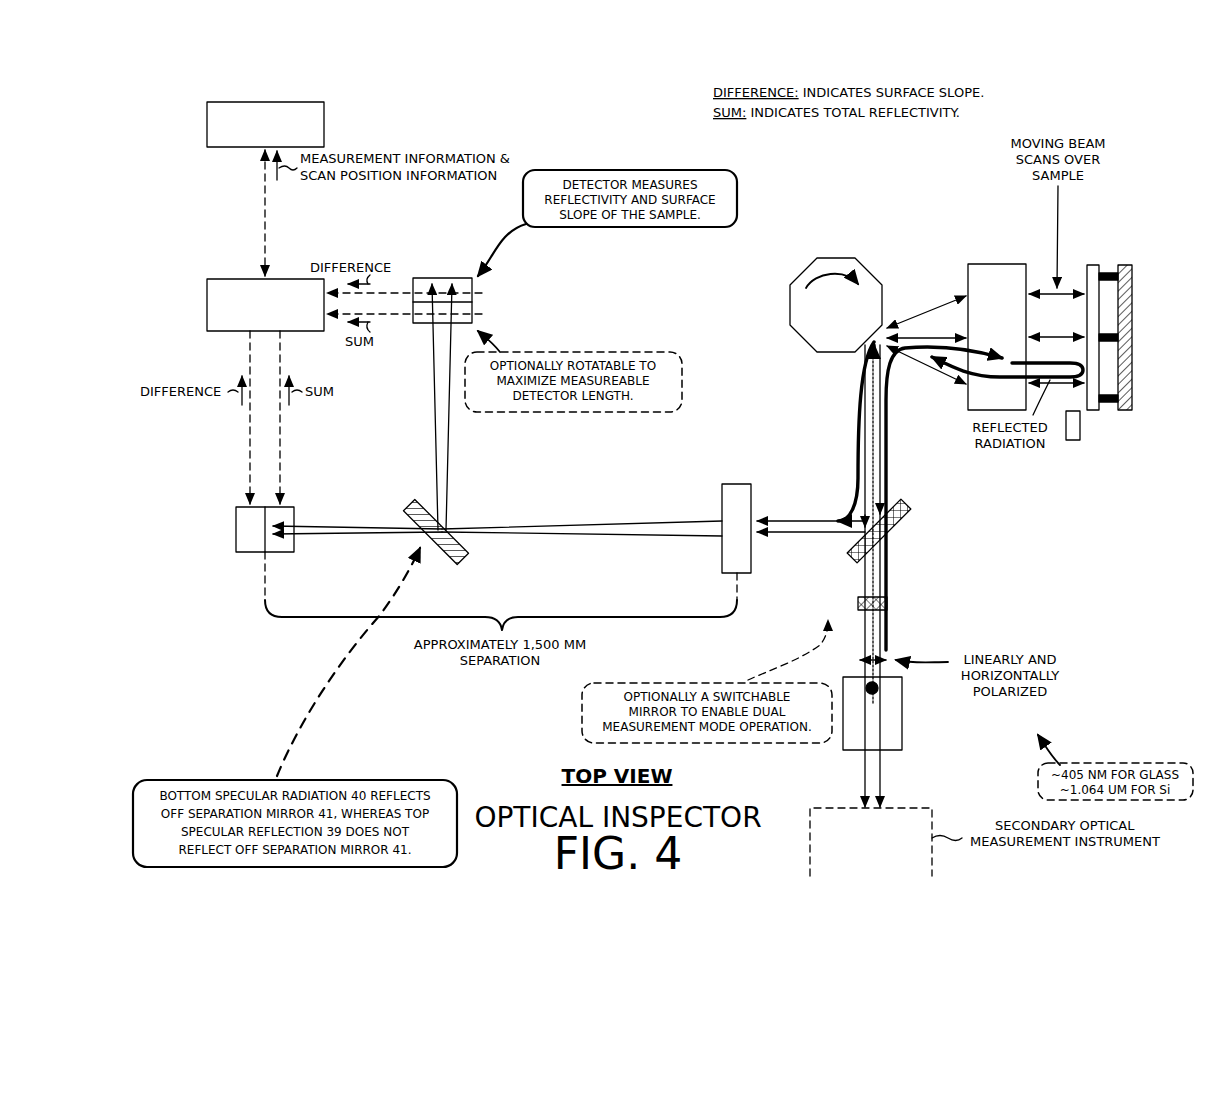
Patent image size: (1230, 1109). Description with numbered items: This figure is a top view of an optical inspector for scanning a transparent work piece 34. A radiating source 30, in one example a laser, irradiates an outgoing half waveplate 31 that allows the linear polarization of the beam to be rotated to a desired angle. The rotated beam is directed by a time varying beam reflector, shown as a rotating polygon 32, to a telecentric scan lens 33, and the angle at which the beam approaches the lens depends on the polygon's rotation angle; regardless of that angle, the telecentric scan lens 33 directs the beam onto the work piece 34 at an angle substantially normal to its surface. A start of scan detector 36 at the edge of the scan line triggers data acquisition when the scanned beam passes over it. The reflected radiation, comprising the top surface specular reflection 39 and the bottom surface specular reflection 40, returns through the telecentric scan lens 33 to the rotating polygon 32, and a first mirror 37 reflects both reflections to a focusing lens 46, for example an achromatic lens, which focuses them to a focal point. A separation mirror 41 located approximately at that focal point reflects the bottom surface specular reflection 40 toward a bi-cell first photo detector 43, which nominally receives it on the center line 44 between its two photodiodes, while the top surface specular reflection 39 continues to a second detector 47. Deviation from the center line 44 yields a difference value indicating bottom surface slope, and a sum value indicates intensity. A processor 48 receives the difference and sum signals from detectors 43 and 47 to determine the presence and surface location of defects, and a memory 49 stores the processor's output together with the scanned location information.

The radiating source 30 is at (902, 720).
The outgoing half waveplate 31 is at (887, 603).
The rotating polygon 32 is at (862, 232).
The telecentric scan lens 33 is at (996, 262).
The work piece 34 is at (1109, 434).
The start of scan detector 36 is at (1073, 440).
The first mirror 37 is at (854, 562).
The top surface specular reflection 39 is at (915, 778).
The bottom surface specular reflection 40 is at (863, 778).
The separation mirror 41 is at (468, 560).
The first photo detector 43 is at (442, 278).
The center line 44 is at (472, 302).
The focusing lens 46 is at (737, 484).
The second detector 47 is at (236, 529).
The processor 48 is at (265, 305).
The memory 49 is at (265, 124).